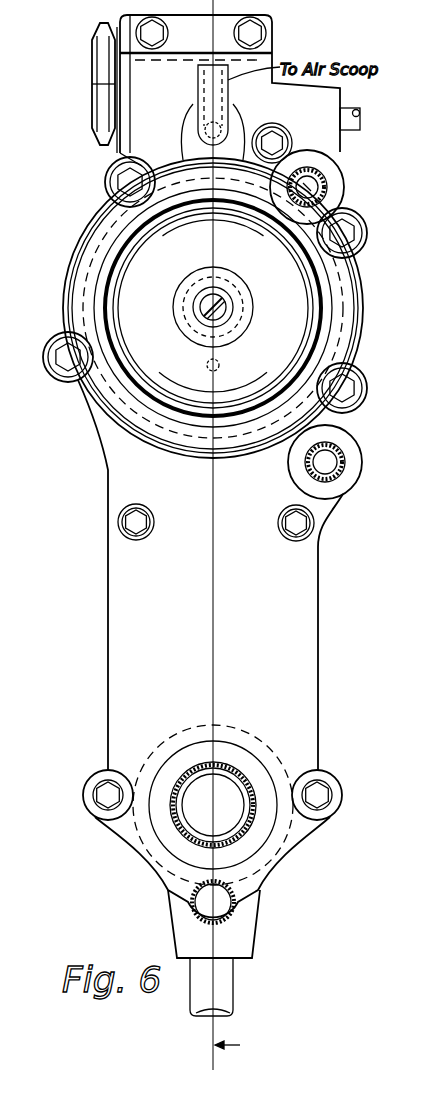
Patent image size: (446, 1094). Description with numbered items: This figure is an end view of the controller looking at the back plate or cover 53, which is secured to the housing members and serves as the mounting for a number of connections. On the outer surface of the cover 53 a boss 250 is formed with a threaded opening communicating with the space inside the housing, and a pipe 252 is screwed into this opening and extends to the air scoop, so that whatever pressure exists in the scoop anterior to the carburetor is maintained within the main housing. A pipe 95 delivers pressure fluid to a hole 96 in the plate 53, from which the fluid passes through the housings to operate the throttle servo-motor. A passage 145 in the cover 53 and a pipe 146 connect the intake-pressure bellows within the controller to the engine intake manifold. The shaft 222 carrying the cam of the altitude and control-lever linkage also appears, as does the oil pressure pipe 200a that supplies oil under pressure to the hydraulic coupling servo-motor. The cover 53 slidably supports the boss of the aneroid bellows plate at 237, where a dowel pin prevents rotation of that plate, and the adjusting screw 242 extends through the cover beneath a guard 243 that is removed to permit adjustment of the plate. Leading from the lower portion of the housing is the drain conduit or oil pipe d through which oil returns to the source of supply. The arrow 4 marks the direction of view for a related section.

The back plate or cover 53 is at (79, 252).
The pipe 252 is at (199, 88).
The boss 250 is at (191, 125).
The shaft 222 is at (360, 113).
The passage 145 is at (333, 195).
The pipe 146 is at (328, 183).
The screw 242 is at (192, 307).
The guard 243 is at (238, 305).
The dowel pin 237 is at (219, 365).
The pipe 95 is at (312, 468).
The hole 96 is at (333, 456).
The drain conduit d is at (190, 773).
The oil pressure pipe 200a is at (233, 978).
The section line 4 is at (238, 1045).